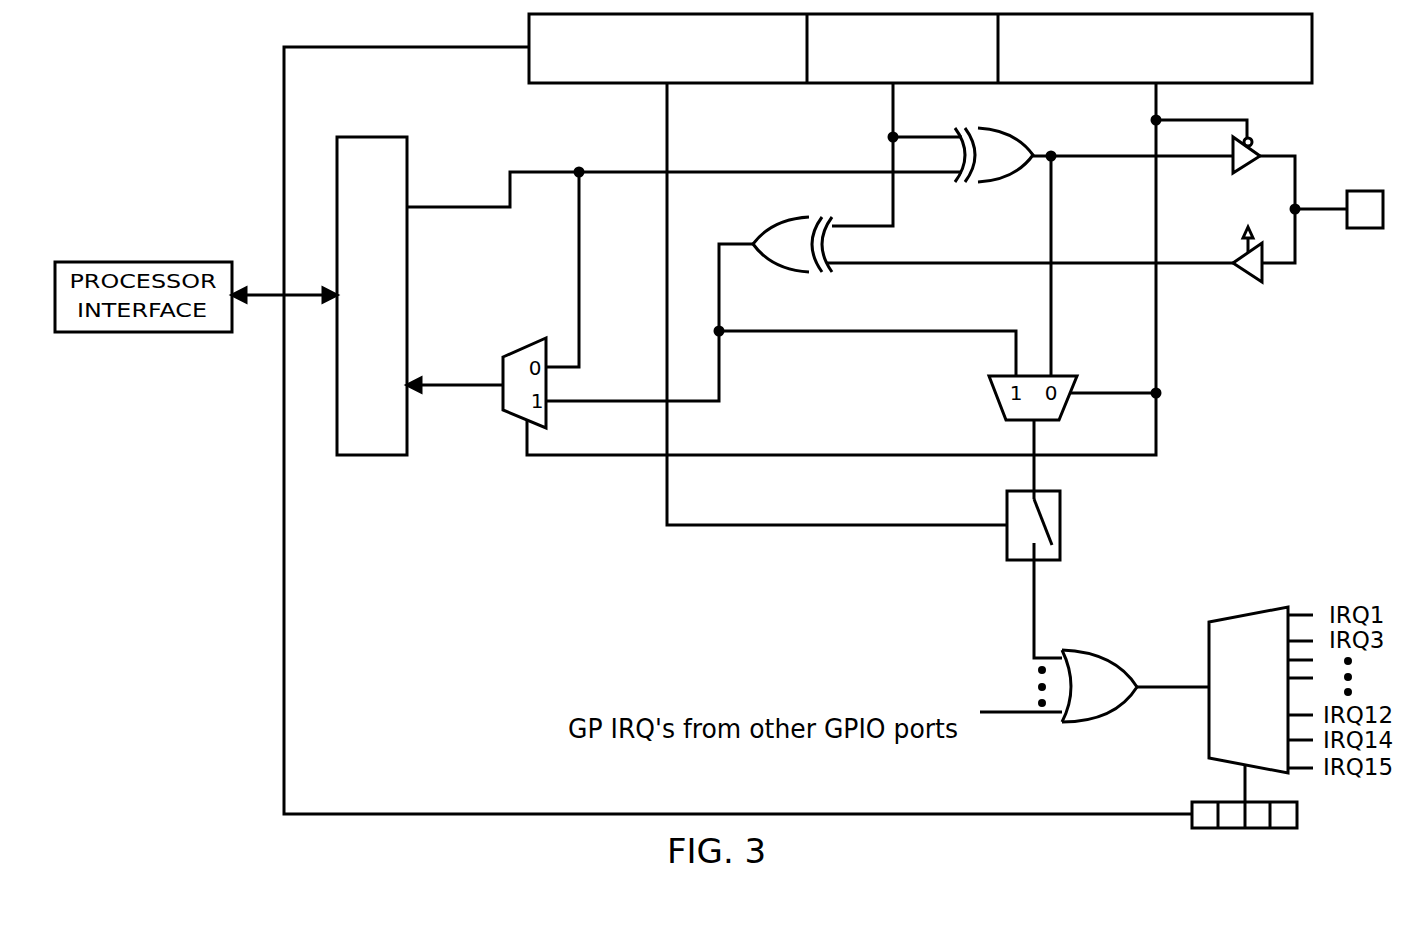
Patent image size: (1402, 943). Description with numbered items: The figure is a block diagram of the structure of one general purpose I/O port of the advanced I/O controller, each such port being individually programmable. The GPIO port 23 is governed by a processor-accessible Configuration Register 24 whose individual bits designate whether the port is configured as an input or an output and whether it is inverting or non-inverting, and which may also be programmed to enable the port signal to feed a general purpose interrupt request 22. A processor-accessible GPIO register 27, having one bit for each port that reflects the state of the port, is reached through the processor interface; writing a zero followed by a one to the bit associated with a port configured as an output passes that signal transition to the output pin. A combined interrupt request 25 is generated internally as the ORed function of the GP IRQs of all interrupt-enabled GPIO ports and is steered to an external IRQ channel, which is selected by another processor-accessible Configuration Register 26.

The general purpose interrupt request 22 is at (1040, 623).
The GPIO port 23 is at (1365, 190).
The Configuration Register 24 is at (1258, 95).
The combined interrupt request 25 is at (1190, 672).
The Configuration Register 26 is at (1228, 800).
The GPIO register 27 is at (356, 130).